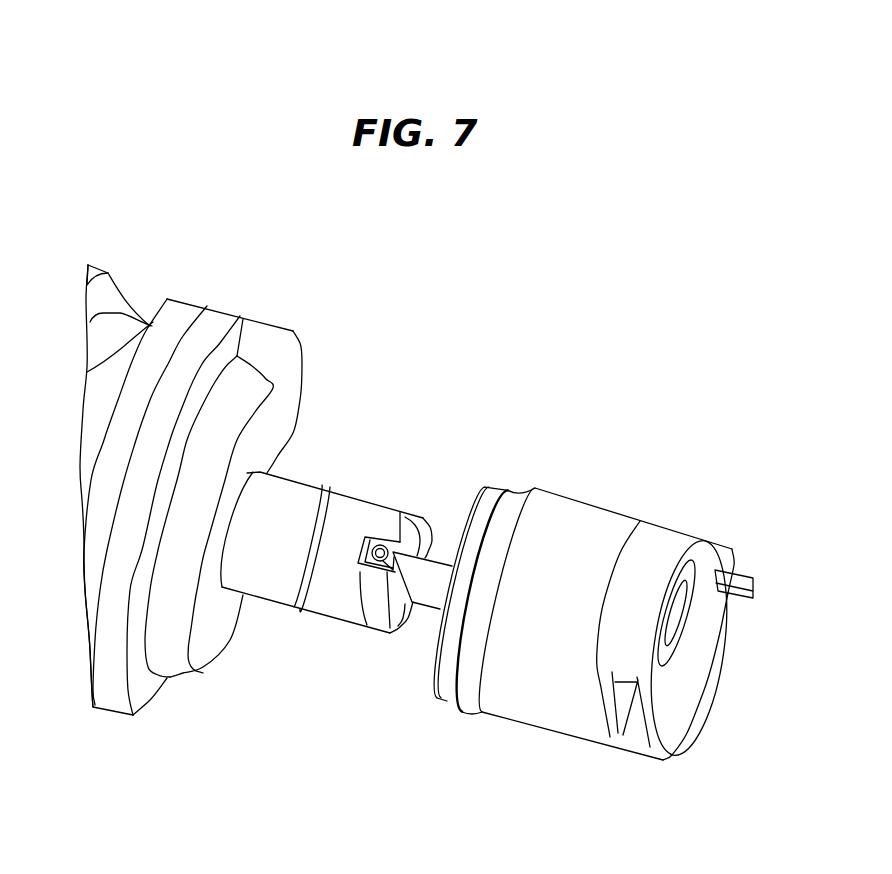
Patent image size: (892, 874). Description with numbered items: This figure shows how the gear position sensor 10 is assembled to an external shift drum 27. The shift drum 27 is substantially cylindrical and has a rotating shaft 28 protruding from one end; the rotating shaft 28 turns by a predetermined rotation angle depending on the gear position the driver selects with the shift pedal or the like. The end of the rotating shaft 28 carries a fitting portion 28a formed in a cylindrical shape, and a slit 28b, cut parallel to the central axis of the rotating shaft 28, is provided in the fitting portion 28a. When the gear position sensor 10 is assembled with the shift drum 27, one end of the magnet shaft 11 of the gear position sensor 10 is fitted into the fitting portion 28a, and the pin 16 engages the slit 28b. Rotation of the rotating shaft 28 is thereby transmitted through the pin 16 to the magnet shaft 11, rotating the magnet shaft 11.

The gear position sensor 10 is at (610, 492).
The magnet shaft 11 is at (441, 563).
The pin 16 is at (389, 548).
The shift drum 27 is at (174, 665).
The rotating shaft 28 is at (310, 612).
The fitting portion 28a is at (411, 625).
The slit 28b is at (330, 592).